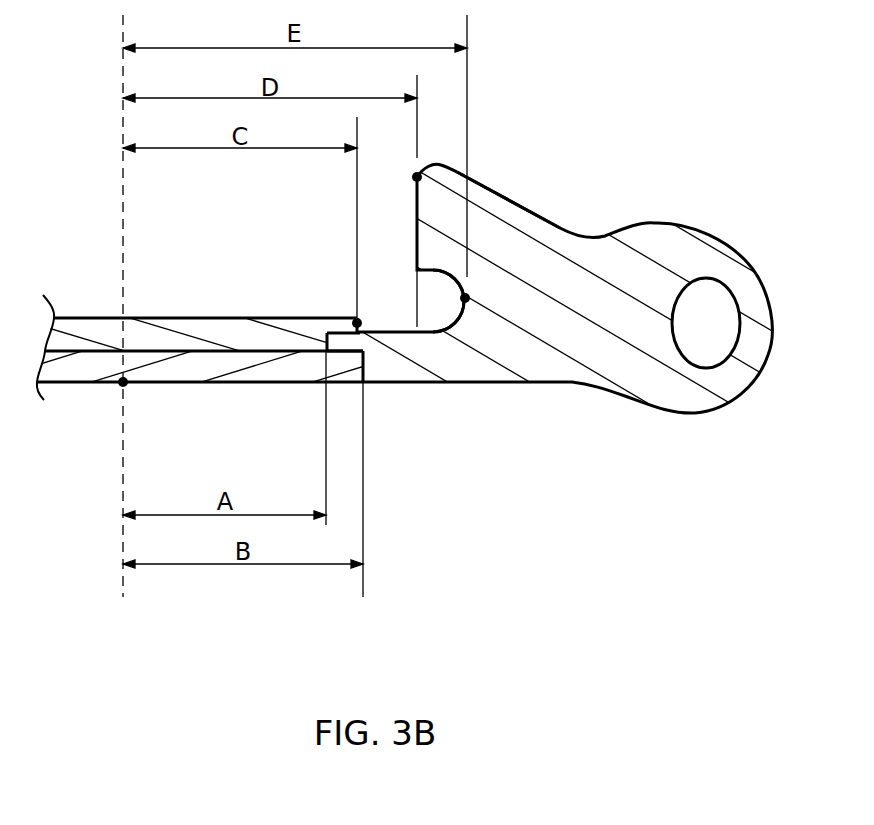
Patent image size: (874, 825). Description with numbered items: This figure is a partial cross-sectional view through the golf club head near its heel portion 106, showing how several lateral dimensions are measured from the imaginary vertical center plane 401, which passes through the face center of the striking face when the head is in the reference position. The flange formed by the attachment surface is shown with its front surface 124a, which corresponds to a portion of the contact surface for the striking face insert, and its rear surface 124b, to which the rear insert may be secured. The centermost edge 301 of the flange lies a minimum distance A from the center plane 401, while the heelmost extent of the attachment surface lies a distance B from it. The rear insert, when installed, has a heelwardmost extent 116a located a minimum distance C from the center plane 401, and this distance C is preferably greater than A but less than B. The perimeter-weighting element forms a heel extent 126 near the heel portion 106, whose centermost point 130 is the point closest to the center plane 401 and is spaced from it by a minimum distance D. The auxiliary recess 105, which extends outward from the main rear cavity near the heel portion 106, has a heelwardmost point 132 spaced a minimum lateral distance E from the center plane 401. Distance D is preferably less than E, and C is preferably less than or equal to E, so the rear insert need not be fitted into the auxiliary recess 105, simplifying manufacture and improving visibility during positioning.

The vertical center plane 401 is at (120, 220).
The centermost edge of the flange 301 is at (248, 318).
The rear surface of the flange 124b is at (356, 322).
The front surface of the flange 124a is at (343, 352).
The heel portion 106 is at (668, 185).
The heel extent 126 is at (485, 208).
The auxiliary recess 105 is at (406, 294).
The centermost point 130 is at (414, 177).
The heelwardmost extent of the rear insert 116a is at (372, 322).
The heelwardmost point 132 is at (468, 298).